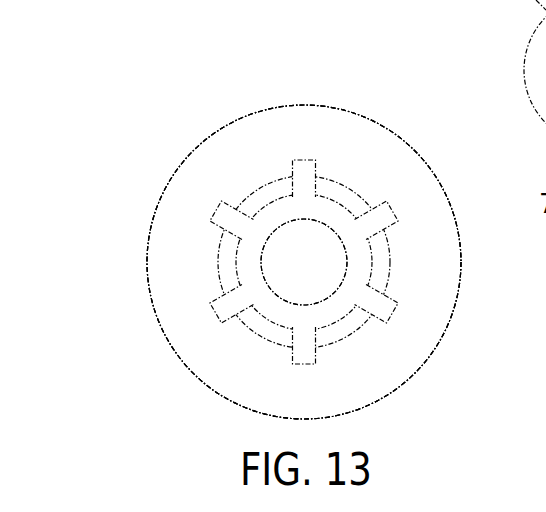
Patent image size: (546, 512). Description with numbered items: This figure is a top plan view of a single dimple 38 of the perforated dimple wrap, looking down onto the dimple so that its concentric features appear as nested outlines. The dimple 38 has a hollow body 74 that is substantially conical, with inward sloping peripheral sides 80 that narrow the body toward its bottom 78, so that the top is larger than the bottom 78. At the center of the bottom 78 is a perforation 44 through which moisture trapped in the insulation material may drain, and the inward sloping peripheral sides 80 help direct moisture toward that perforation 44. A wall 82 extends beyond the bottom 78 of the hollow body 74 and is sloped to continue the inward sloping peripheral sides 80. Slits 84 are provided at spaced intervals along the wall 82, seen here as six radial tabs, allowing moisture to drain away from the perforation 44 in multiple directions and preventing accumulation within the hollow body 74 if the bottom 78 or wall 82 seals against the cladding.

The dimple 38 is at (156, 55).
The perforation 44 is at (305, 257).
The hollow body 74 is at (240, 150).
The bottom 78 is at (353, 252).
The inward sloping peripheral sides 80 is at (180, 298).
The wall 82 is at (343, 330).
The slits 84 is at (303, 348).